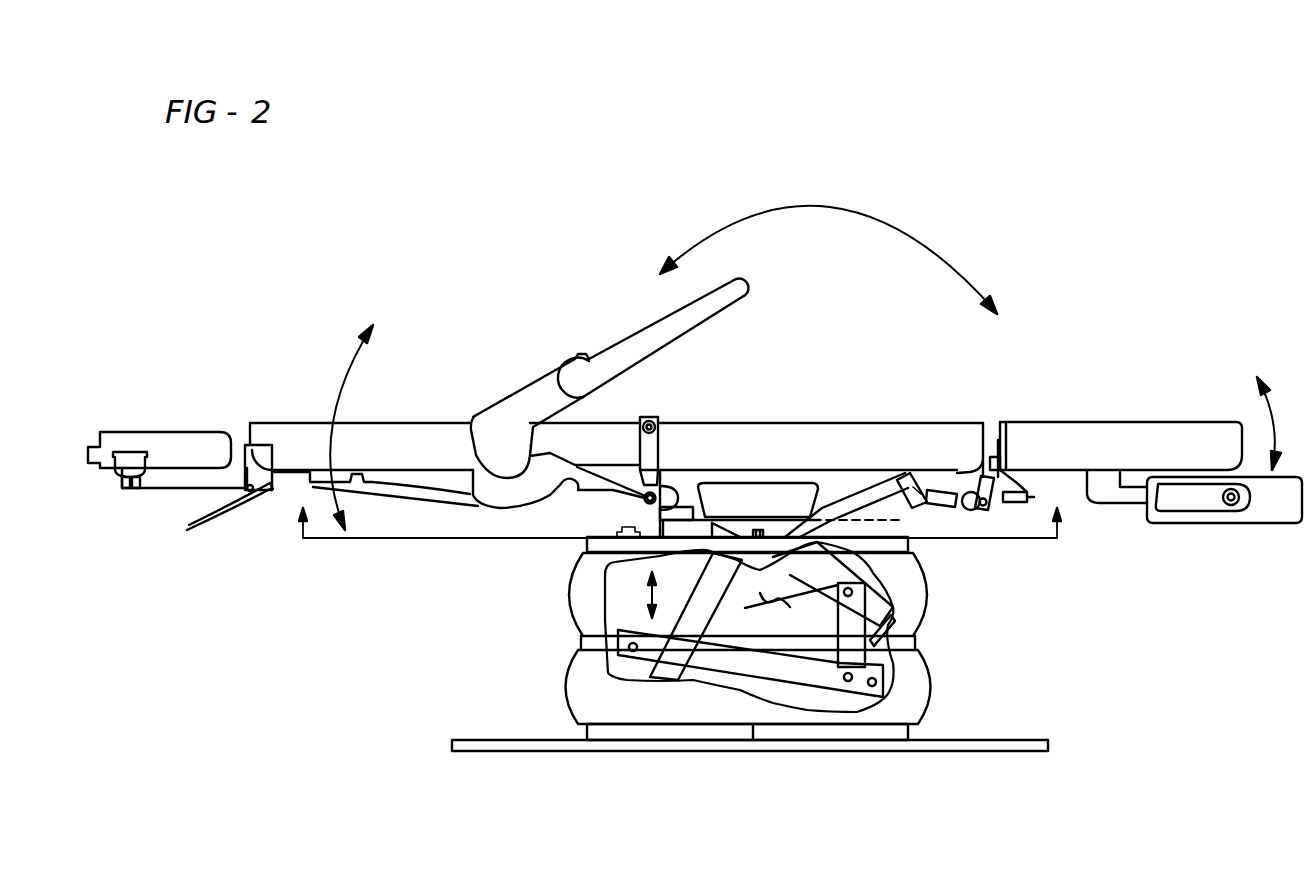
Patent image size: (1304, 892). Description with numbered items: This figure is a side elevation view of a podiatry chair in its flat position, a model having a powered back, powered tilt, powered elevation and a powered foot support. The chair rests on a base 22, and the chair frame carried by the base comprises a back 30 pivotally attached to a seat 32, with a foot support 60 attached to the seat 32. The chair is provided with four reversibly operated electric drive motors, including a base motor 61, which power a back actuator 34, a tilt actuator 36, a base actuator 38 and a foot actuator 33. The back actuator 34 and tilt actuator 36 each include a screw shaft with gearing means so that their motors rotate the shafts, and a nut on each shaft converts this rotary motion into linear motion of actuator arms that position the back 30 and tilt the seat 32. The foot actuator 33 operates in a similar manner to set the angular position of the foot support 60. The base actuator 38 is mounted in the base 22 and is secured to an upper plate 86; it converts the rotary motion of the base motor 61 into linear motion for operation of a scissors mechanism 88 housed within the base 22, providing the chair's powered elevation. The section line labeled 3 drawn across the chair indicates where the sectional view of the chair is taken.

The section line 3- 3 is at (681, 510).
The base 22 is at (930, 606).
The back 30 is at (292, 420).
The seat 32 is at (795, 418).
The foot actuator 33 is at (1000, 509).
The back actuator 34 is at (630, 512).
The tilt actuator 36 is at (904, 511).
The base actuator 38 is at (840, 571).
The foot support 60 is at (1095, 420).
The base motor 61 is at (822, 607).
The upper plate 86 is at (926, 538).
The scissors mechanism 88 is at (737, 646).